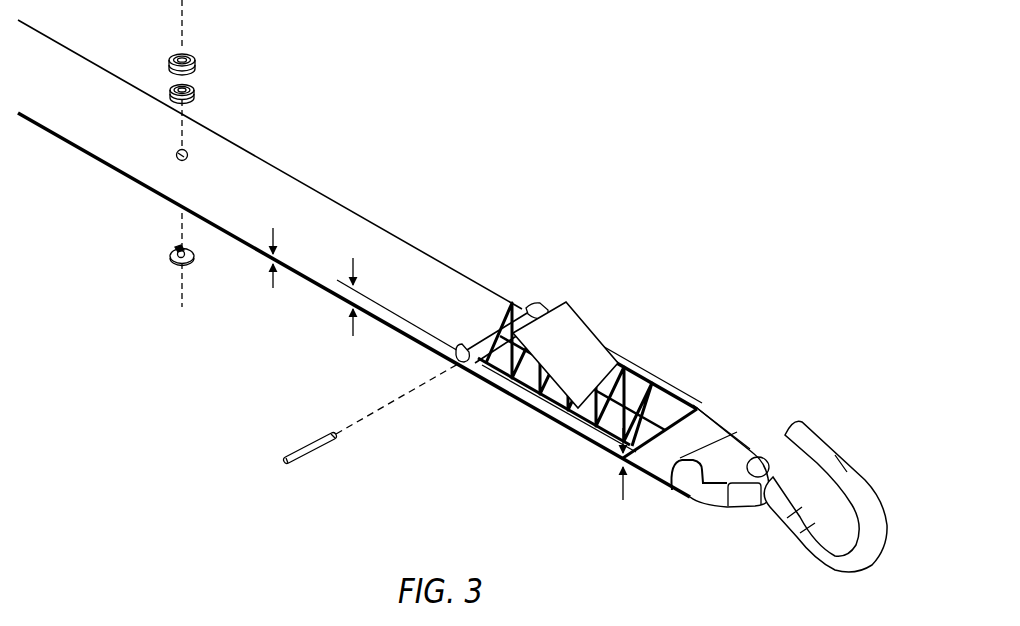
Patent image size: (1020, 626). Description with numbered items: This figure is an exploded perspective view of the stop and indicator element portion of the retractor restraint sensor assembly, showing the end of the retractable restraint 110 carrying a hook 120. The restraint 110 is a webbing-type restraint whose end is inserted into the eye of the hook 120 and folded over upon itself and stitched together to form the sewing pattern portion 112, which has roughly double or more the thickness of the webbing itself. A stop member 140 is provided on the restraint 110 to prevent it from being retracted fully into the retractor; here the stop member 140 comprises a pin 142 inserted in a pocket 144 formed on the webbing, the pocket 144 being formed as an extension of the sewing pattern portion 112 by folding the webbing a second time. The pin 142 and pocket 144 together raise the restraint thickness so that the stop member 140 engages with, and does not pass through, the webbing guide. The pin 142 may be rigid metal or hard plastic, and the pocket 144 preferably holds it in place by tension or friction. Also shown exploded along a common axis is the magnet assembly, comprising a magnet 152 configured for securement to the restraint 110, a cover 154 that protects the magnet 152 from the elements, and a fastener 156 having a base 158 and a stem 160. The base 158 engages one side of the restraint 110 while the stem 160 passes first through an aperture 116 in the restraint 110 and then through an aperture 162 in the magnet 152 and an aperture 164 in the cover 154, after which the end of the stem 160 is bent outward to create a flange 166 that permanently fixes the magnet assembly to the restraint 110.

The retractable restraint 110 is at (412, 273).
The sewing pattern portion 112 is at (657, 388).
The aperture 116 is at (190, 155).
The hook 120 is at (847, 463).
The stop member 140 is at (333, 450).
The pin 142 is at (307, 447).
The pocket 144 is at (545, 305).
The magnet 152 is at (195, 98).
The cover 154 is at (190, 66).
The fastener 156 is at (147, 267).
The base 158 is at (190, 262).
The stem 160 is at (176, 255).
The aperture in the magnet 162 is at (190, 88).
The aperture in the cover 164 is at (184, 55).
The flange 166 is at (176, 248).